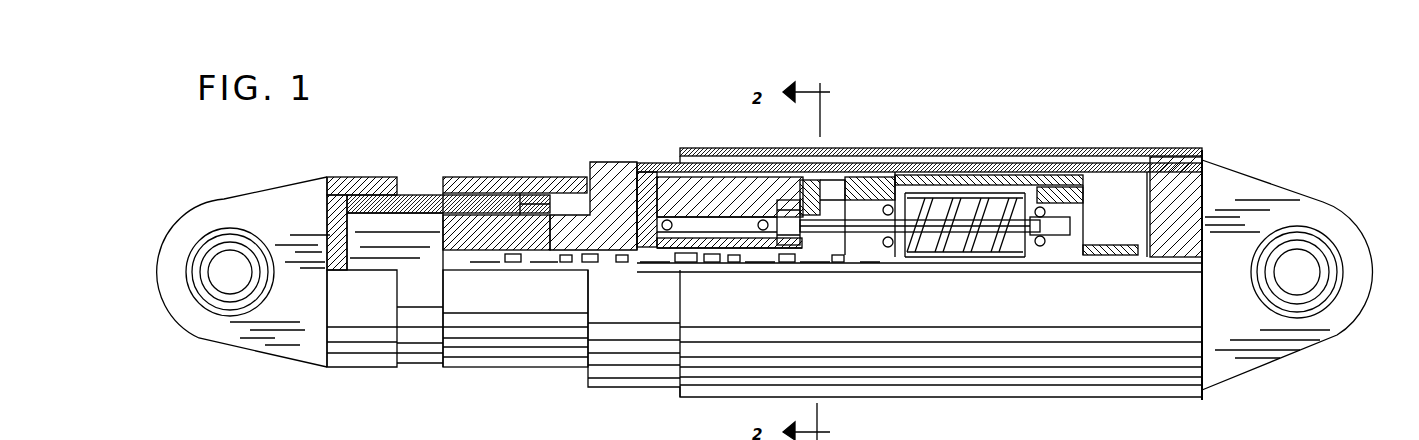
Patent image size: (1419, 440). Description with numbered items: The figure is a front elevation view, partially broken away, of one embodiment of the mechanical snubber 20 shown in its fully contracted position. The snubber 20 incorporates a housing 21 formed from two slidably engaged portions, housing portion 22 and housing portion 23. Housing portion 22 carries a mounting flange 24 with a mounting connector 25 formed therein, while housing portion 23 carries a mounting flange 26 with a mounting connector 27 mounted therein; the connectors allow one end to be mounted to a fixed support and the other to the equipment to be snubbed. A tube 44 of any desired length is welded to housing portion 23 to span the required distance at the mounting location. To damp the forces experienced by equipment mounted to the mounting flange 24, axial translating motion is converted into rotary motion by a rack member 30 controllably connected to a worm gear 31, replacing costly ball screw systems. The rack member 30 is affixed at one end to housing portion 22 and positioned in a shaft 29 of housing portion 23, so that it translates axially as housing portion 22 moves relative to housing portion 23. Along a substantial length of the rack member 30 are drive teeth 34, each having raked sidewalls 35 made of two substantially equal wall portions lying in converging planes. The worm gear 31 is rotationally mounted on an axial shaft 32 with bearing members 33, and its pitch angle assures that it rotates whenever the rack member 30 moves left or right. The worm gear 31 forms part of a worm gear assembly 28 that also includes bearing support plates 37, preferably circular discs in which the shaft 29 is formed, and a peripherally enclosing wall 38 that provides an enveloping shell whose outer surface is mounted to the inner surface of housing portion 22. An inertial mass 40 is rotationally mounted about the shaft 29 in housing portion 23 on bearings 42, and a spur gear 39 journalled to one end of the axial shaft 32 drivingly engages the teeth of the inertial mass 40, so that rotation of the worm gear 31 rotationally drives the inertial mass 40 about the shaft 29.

The mechanical snubber 20 is at (587, 398).
The housing 21 is at (648, 156).
The housing portion 22 is at (993, 160).
The housing portion 23 is at (530, 180).
The mounting flange 24 is at (1232, 183).
The mounting connector 25 is at (1328, 255).
The mounting flange 26 is at (293, 192).
The mounting connector 27 is at (213, 307).
The worm gear assembly 28 is at (1058, 262).
The shaft 29 is at (517, 247).
The rack member 30 is at (493, 265).
The worm gear 31 is at (965, 225).
The axial shaft 32 is at (1072, 224).
The bearing members 33 is at (888, 205).
The drive teeth 34 is at (568, 263).
The raked sidewalls 35 is at (591, 253).
The bearing support plates 37 is at (857, 188).
The peripherally enclosing wall 38 is at (1000, 178).
The spur gear 39 is at (822, 197).
The inertial mass 40 is at (727, 207).
The bearings 42 is at (692, 259).
The tube 44 is at (674, 152).